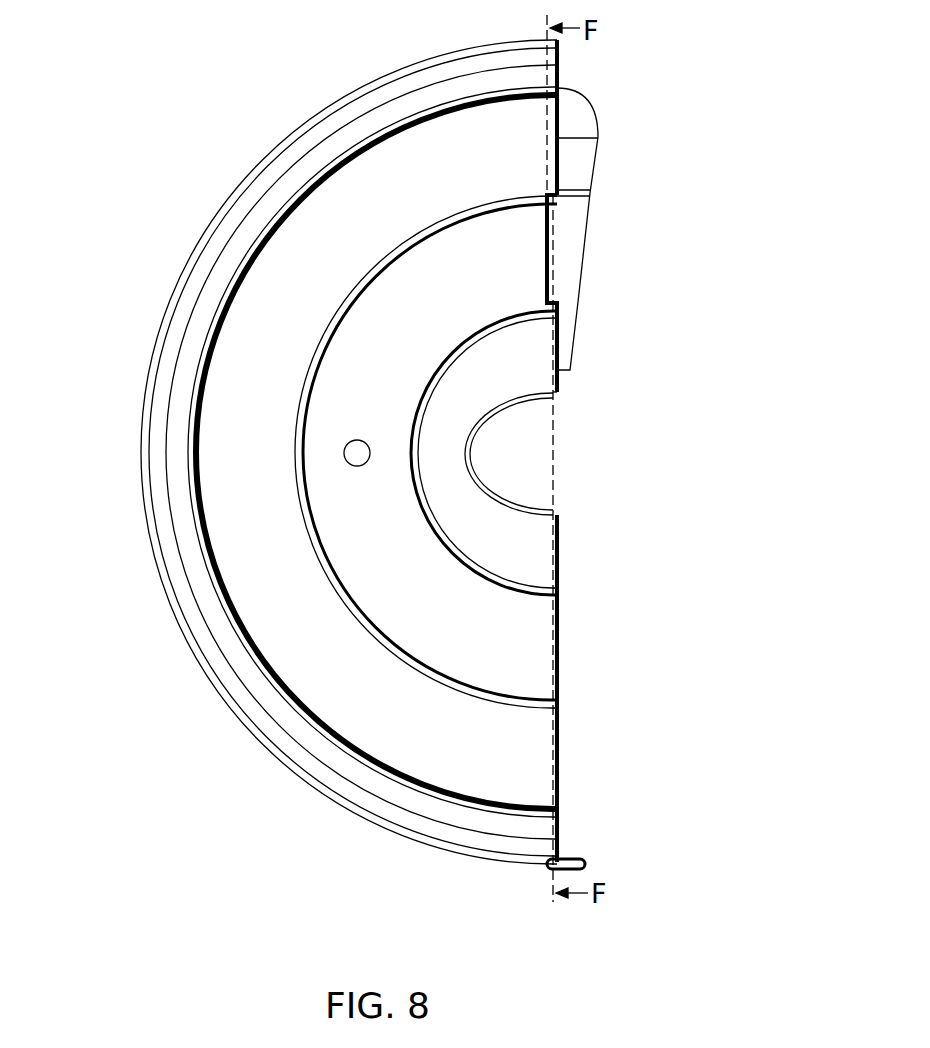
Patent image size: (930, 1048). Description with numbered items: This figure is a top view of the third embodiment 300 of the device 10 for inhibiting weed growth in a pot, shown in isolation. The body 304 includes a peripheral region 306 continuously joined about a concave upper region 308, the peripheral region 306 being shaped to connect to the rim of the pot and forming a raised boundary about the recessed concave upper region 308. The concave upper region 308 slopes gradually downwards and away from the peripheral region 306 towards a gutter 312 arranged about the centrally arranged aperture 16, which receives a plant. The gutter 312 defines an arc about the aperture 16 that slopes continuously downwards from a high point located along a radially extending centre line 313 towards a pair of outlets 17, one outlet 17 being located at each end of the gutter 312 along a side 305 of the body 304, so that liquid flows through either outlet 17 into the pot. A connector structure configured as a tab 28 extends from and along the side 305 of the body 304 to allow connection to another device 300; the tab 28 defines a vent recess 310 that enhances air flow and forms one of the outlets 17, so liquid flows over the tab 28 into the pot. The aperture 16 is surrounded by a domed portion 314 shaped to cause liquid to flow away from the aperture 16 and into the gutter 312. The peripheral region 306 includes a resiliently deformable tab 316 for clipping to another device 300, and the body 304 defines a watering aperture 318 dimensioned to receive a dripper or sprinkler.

The device 10 is at (170, 174).
The centrally arranged aperture 16 is at (535, 466).
The outlet 17 is at (550, 284).
The tab 28 is at (582, 170).
The third embodiment of the device 300 is at (685, 159).
The body 304 is at (520, 763).
The side 305 is at (562, 373).
The peripheral region 306 is at (463, 88).
The concave upper region 308 is at (422, 180).
The vent recess 310 is at (573, 279).
The gutter 312 is at (430, 642).
The radially extending centre line 313 is at (262, 463).
The domed portion 314 is at (537, 553).
The resiliently deformable tab 316 is at (548, 866).
The watering aperture 318 is at (343, 452).